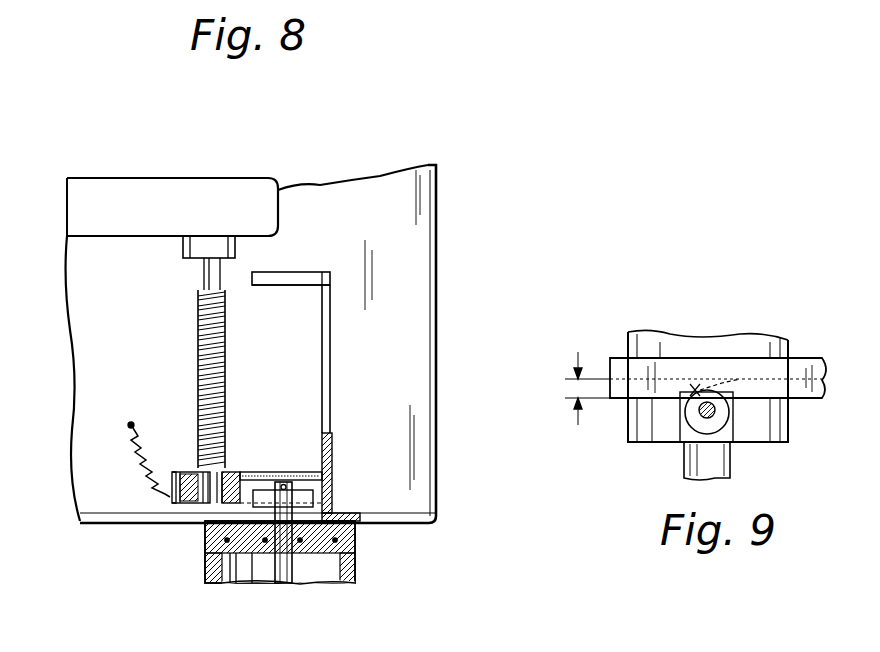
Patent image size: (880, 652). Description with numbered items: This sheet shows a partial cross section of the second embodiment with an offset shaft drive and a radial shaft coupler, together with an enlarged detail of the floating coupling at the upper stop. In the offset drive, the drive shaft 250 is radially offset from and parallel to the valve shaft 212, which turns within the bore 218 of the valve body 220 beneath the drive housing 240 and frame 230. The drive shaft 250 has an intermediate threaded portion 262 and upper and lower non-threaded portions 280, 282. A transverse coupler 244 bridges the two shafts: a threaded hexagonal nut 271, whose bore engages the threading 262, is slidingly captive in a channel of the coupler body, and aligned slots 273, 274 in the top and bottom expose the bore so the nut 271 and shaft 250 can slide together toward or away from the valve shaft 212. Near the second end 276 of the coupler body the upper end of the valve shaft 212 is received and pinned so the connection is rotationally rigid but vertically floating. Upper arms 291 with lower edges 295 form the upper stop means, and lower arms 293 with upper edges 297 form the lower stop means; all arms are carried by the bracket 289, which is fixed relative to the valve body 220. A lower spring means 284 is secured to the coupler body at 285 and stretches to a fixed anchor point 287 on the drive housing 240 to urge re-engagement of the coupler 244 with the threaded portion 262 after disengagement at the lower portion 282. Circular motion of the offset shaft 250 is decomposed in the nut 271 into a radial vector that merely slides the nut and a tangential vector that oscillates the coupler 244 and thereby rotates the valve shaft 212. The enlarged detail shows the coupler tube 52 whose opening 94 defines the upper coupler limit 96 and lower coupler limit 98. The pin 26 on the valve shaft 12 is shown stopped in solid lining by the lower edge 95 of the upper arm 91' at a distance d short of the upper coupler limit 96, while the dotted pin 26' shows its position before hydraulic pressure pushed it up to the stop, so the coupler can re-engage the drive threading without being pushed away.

In FIG. 8, the frame panel 230 is at (448, 280).
In FIG. 8, the drive housing 240 is at (437, 430).
In FIG. 8, the upper non-threaded portion 280 is at (205, 272).
In FIG. 8, the drive shaft 250 is at (198, 353).
In FIG. 8, the threaded portion 262 is at (225, 340).
In FIG. 8, the upper arm 291 is at (300, 278).
In FIG. 8, the lower edges of upper arms 295 is at (273, 285).
In FIG. 8, the bracket 289 is at (330, 358).
In FIG. 8, the second end of coupler body 276 is at (318, 484).
In FIG. 8, the lower arm 293 is at (325, 508).
In FIG. 8, the spring attachment point 285 is at (170, 498).
In FIG. 8, the slot in bottom 274 is at (175, 514).
In FIG. 8, the lower non-threaded portion 282 is at (213, 508).
In FIG. 8, the threaded hexagonal nut 271 is at (198, 470).
In FIG. 8, the slot in top 273 is at (176, 472).
In FIG. 8, the transverse coupler 244 is at (246, 466).
In FIG. 8, the upper edges of lower arms 297 is at (280, 488).
In FIG. 8, the valve body 220 is at (356, 568).
In FIG. 8, the bore of valve body 218 is at (230, 575).
In FIG. 8, the valve shaft 212 is at (285, 574).
In FIG. 8, the lower spring means 284 is at (148, 465).
In FIG. 8, the fixed anchor point 287 is at (130, 425).
In FIG. 9, the coupler tube 52 is at (628, 345).
In FIG. 9, the upper arm 91' is at (676, 368).
In FIG. 9, the lower edge of upper arm 95 is at (632, 403).
In FIG. 9, the distance d is at (587, 380).
In FIG. 9, the opening 94 is at (727, 420).
In FIG. 9, the valve shaft 12 is at (730, 472).
In FIG. 9, the lower coupler limit 98 is at (695, 430).
In FIG. 9, the pin 26 is at (686, 376).
In FIG. 9, the pin in dotted position 26' is at (684, 413).
In FIG. 9, the upper coupler limit 96 is at (736, 378).